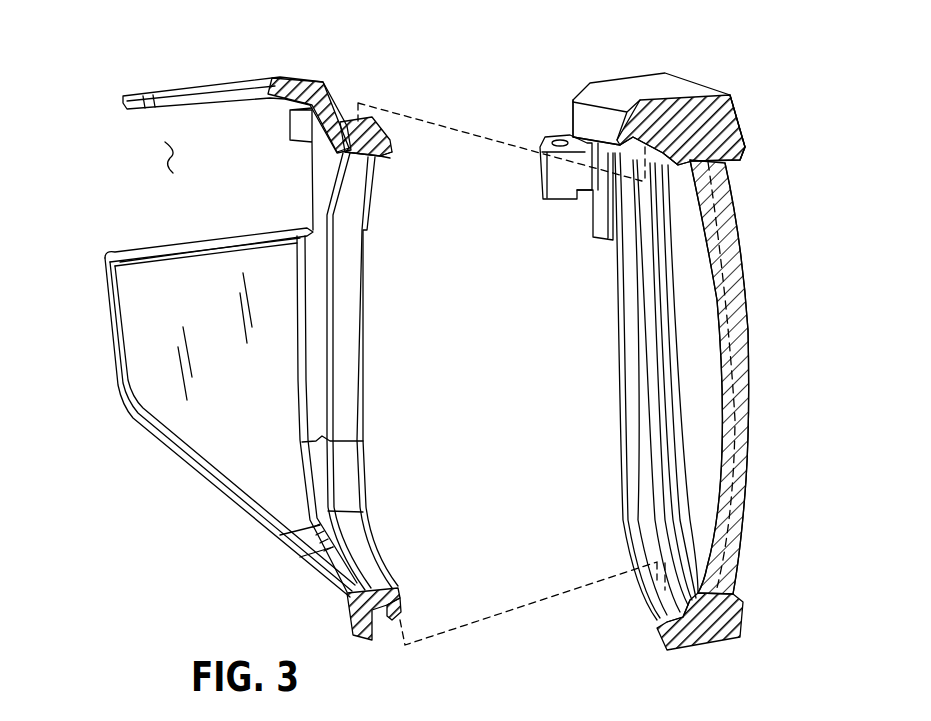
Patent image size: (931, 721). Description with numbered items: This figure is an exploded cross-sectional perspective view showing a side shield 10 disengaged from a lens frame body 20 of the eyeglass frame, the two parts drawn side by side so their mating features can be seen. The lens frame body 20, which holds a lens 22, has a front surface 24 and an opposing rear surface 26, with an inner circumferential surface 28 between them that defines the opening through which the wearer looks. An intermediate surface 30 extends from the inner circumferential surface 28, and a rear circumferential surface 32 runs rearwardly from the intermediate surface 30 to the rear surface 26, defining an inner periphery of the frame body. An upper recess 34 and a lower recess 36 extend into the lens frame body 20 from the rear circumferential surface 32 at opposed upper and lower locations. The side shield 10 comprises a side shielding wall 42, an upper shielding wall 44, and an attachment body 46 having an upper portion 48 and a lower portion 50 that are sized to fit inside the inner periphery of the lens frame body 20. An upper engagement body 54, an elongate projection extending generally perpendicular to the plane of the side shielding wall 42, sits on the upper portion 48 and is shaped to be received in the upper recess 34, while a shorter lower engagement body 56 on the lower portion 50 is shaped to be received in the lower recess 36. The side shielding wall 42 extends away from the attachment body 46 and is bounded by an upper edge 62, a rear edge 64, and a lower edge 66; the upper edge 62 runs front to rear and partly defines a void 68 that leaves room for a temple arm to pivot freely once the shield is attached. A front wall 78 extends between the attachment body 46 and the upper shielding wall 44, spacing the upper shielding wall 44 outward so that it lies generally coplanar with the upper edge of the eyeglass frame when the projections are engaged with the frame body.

The side shield 10 is at (138, 44).
The lens frame body 20 is at (707, 100).
The lens 22 is at (742, 395).
The front surface 24 is at (740, 117).
The rear surface 26 is at (567, 118).
The inner circumferential surface 28 is at (740, 158).
The intermediate surface 30 is at (638, 178).
The rear circumferential surface 32 is at (640, 150).
The upper recess 34 is at (643, 163).
The lower recess 36 is at (668, 607).
The side shielding wall 42 is at (178, 405).
The upper shielding wall 44 is at (158, 85).
The attachment body 46 is at (392, 146).
The upper portion 48 is at (381, 155).
The lower portion 50 is at (375, 580).
The upper engagement body 54 is at (370, 130).
The lower engagement body 56 is at (393, 620).
The upper edge 62 is at (212, 236).
The rear edge 64 is at (108, 332).
The lower edge 66 is at (208, 483).
The void 68 is at (165, 157).
The front wall 78 is at (330, 96).